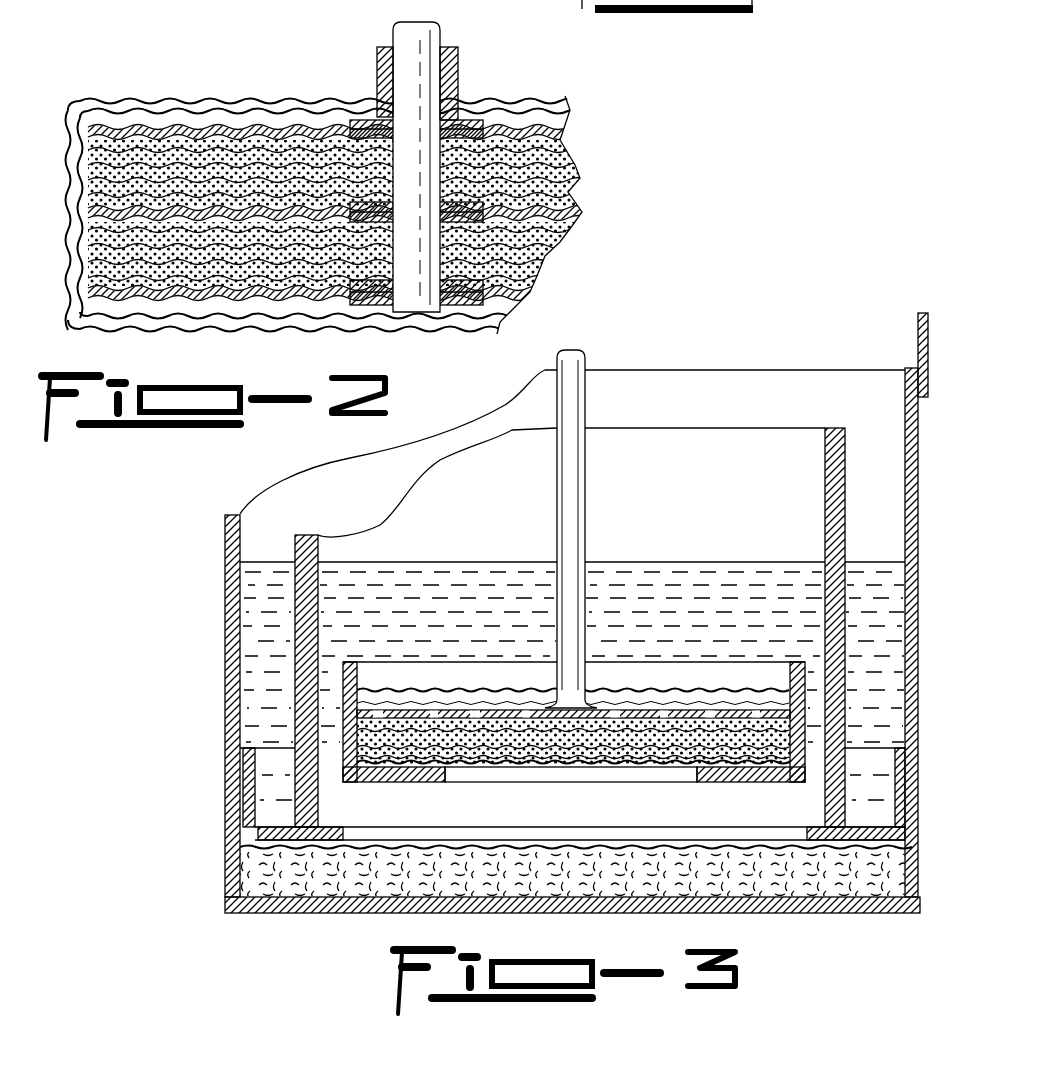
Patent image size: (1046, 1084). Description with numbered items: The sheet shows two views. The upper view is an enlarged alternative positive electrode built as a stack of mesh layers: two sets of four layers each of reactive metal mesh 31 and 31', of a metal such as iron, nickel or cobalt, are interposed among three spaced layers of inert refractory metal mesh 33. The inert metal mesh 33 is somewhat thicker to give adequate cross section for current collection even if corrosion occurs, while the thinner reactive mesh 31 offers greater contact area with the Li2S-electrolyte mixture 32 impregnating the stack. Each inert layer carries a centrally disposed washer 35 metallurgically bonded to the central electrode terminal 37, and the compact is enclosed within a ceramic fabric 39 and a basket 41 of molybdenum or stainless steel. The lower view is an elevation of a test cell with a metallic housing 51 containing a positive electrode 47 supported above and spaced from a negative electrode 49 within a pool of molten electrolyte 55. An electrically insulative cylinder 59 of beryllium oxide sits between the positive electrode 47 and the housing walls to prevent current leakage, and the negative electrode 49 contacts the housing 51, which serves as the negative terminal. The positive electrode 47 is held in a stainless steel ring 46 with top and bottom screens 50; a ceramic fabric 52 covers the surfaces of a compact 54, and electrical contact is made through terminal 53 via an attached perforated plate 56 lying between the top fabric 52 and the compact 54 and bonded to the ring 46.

In FIG. 2, the reactive metal mesh 31 is at (370, 180).
In FIG. 2, the reactive metal mesh 31' is at (371, 254).
In FIG. 2, the Li2S-electrolyte mixture 32 is at (548, 147).
In FIG. 2, the inert refractory metal mesh 33 is at (80, 138).
In FIG. 2, the washer 35 is at (473, 128).
In FIG. 2, the central electrode terminal 37 is at (410, 35).
In FIG. 2, the ceramic fabric 39 is at (166, 111).
In FIG. 2, the basket 41 is at (122, 101).
In FIG. 3, the stainless steel ring 46 is at (753, 773).
In FIG. 3, the positive electrode 47 is at (700, 645).
In FIG. 3, the negative electrode 49 is at (588, 836).
In FIG. 3, the screens 50 is at (617, 688).
In FIG. 3, the metallic housing 51 is at (236, 661).
In FIG. 3, the ceramic fabric 52 is at (444, 710).
In FIG. 3, the terminal 53 is at (574, 505).
In FIG. 3, the compact 54 is at (780, 743).
In FIG. 3, the molten electrolyte 55 is at (466, 601).
In FIG. 3, the perforated plate 56 is at (413, 712).
In FIG. 3, the electrically insulative cylinder 59 is at (300, 603).